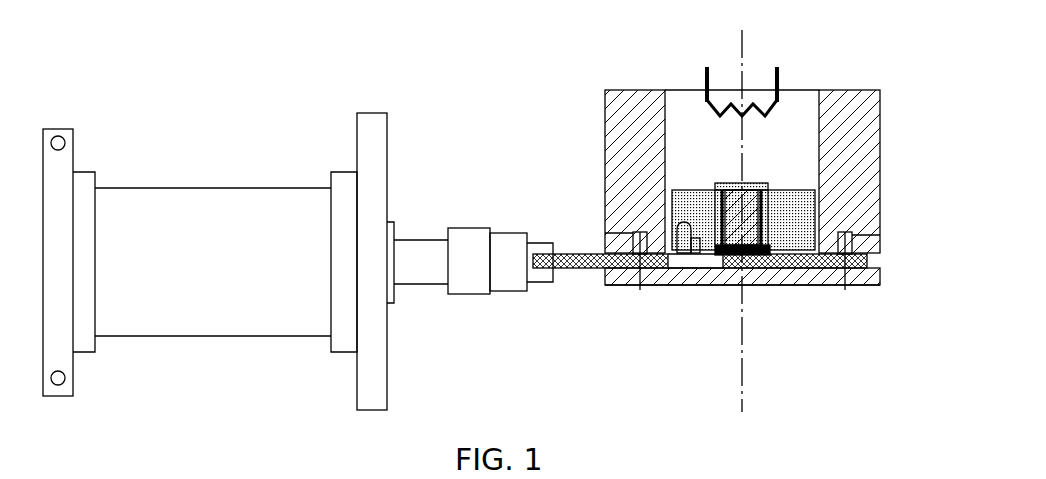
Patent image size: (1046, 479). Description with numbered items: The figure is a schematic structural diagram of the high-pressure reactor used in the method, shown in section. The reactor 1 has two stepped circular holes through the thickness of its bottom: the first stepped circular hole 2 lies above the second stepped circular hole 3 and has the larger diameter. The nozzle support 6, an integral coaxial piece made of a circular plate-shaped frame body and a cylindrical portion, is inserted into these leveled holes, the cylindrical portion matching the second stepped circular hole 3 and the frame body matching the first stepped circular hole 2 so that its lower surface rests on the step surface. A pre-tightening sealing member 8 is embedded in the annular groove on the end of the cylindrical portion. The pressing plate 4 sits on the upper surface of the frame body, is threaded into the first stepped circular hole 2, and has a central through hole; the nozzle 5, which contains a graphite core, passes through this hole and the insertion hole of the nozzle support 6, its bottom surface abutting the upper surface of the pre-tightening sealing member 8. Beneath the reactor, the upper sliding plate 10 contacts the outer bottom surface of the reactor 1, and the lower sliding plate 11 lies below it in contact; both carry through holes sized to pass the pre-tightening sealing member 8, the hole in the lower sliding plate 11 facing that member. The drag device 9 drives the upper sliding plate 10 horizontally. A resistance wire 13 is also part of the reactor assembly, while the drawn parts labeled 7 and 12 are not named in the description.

The reactor 1 is at (627, 120).
The first stepped circular hole 2 is at (800, 195).
The second stepped circular hole 3 is at (862, 248).
The pressing plate 4 is at (700, 218).
The nozzle 5 is at (768, 185).
The nozzle support 6 is at (690, 228).
The screw 7 is at (848, 232).
The pre-tightening sealing member 8 is at (678, 244).
The drag device 9 is at (237, 205).
The upper sliding plate 10 is at (572, 267).
The lower sliding plate 11 is at (878, 280).
The coupling 12 is at (508, 275).
The resistance wire 13 is at (770, 110).